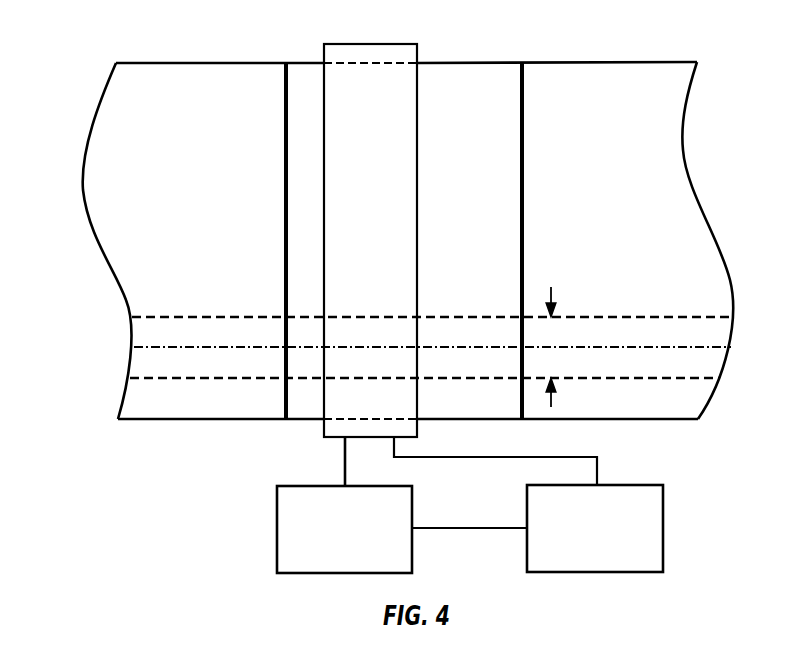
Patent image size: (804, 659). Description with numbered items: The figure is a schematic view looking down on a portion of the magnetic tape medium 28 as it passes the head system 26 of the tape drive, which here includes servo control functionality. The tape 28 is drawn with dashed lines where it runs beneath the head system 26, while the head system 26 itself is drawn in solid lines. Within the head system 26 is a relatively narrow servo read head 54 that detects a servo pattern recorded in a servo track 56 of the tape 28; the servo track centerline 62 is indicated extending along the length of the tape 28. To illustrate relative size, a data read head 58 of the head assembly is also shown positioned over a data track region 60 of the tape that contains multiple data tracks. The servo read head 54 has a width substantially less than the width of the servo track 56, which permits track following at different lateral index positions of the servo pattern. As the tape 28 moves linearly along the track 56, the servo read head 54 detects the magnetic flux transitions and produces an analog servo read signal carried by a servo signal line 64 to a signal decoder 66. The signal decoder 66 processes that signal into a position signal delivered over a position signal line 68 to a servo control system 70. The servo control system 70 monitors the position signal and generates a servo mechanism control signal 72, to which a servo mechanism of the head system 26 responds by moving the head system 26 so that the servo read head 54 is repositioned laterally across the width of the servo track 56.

The head system 26 is at (343, 43).
The magnetic tape medium 28 is at (83, 177).
The servo read head 54 is at (340, 346).
The servo track 56 is at (551, 292).
The data read head 58 is at (347, 102).
The data track region 60 is at (525, 119).
The servo track centerline 62 is at (603, 347).
The servo signal line 64 is at (344, 481).
The signal decoder 66 is at (285, 486).
The position signal line 68 is at (455, 528).
The servo control system 70 is at (630, 485).
The servo mechanism control signal 72 is at (495, 456).